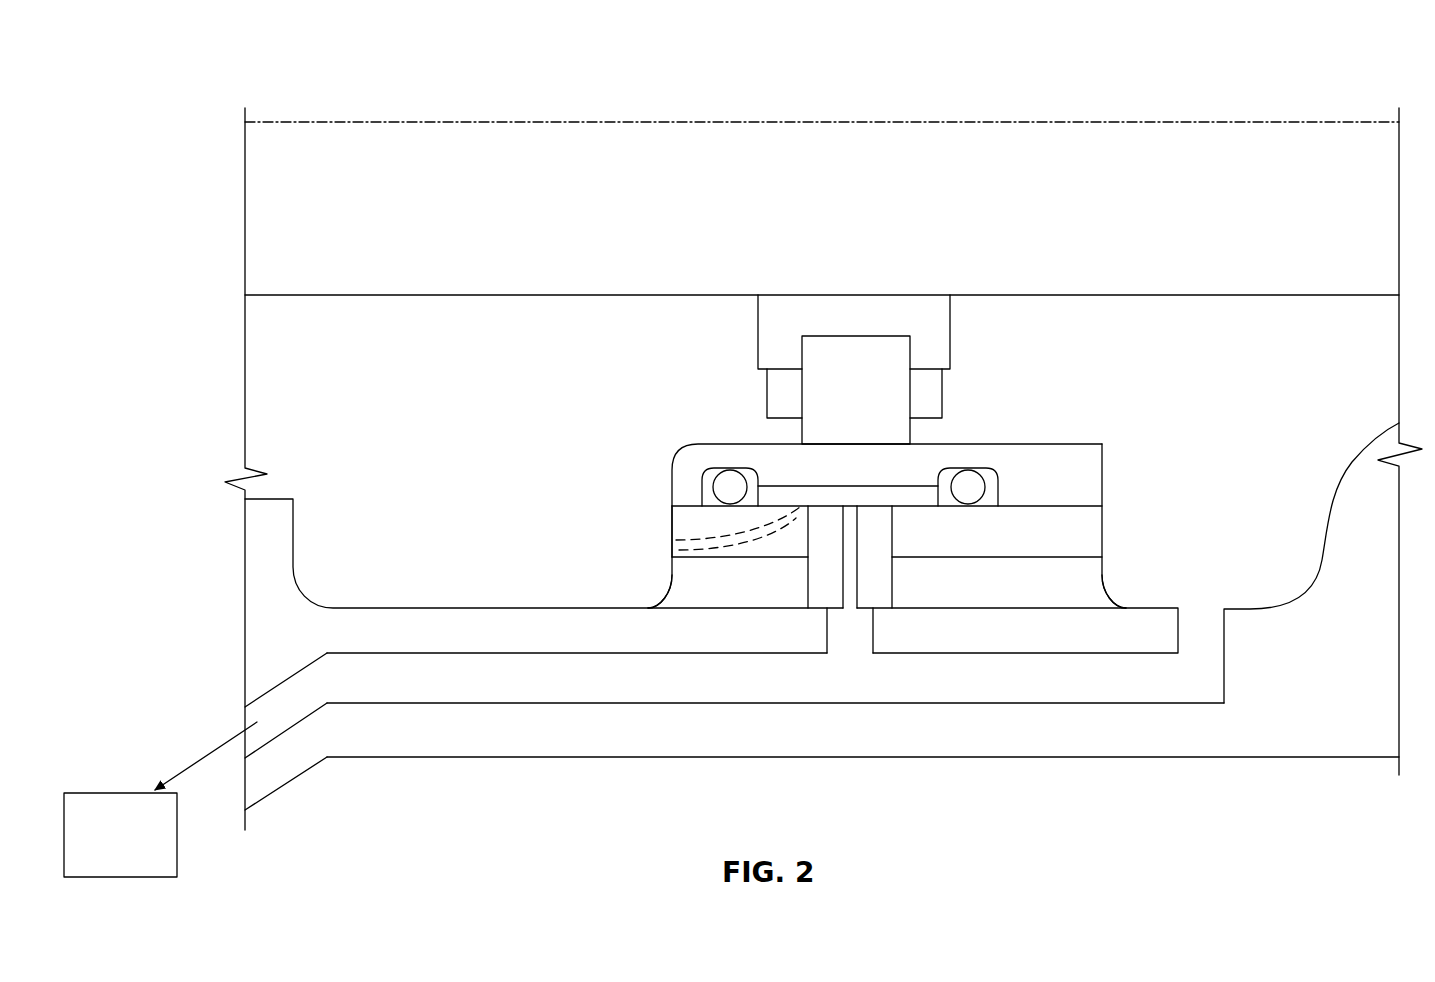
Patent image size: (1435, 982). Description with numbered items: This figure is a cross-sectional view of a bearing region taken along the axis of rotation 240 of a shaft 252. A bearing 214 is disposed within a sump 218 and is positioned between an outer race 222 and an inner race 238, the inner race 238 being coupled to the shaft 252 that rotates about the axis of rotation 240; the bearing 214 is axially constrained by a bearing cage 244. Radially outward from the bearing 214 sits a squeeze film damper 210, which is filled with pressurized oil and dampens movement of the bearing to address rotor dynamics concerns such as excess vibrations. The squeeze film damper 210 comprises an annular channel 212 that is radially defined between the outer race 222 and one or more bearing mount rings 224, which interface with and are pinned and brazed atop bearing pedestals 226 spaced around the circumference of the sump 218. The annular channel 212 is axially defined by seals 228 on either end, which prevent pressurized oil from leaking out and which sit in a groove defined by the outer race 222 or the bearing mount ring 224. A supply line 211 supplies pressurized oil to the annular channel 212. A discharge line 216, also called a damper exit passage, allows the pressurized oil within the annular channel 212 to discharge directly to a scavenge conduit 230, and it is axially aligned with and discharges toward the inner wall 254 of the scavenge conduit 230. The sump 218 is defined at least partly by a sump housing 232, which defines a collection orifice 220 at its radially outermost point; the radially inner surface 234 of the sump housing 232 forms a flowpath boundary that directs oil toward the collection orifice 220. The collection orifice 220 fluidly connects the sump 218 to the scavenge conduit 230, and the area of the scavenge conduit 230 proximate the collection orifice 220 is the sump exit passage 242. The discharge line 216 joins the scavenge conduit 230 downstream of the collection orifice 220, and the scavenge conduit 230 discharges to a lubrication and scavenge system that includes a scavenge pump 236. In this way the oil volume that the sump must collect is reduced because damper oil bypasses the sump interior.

The squeeze film damper 210 is at (785, 497).
The supply line 211 is at (672, 542).
The annular channel 212 is at (763, 474).
The bearing 214 is at (827, 352).
The discharge line 216 is at (843, 570).
The sump 218 is at (1257, 512).
The collection orifice 220 is at (1193, 619).
The outer race 222 is at (1025, 463).
The bearing mount ring 224 is at (683, 535).
The bearing pedestal 226 is at (690, 593).
The seal 228 is at (963, 487).
The scavenge conduit 230 is at (1032, 685).
The sump housing 232 is at (1331, 513).
The radially inner surface 234 is at (1110, 593).
The scavenge pump 236 is at (140, 805).
The inner race 238 is at (767, 322).
The axis of rotation 240 is at (686, 120).
The sump exit passage 242 is at (1186, 712).
The bearing cage 244 is at (927, 403).
The shaft 252 is at (428, 210).
The inner wall 254 is at (850, 702).